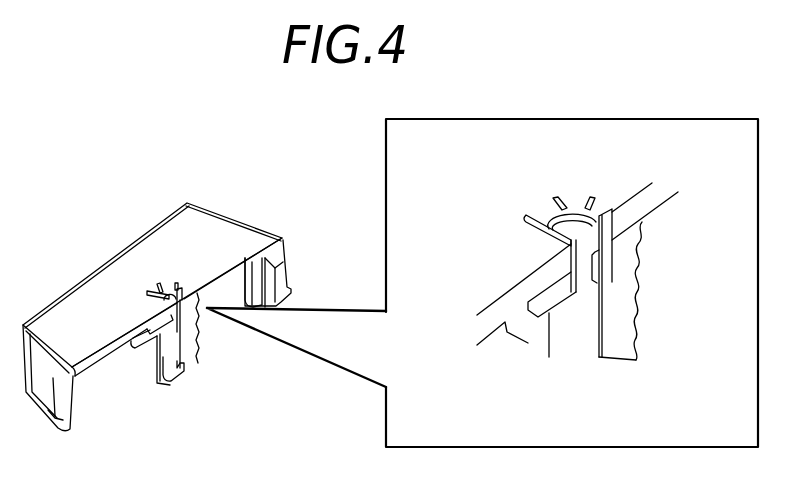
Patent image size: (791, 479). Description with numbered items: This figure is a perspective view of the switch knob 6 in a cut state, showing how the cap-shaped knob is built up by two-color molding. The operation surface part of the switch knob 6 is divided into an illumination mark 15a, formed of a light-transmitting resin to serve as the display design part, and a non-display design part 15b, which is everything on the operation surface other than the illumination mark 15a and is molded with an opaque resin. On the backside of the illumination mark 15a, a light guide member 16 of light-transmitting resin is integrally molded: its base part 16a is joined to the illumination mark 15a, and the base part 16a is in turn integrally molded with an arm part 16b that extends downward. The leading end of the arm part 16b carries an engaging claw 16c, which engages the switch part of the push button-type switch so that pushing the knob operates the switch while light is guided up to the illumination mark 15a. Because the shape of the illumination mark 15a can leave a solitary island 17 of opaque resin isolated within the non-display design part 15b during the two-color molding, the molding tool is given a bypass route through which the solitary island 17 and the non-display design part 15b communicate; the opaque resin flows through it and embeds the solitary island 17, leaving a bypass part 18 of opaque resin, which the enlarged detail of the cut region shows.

The switch knob 6 is at (125, 246).
The illumination mark 15a is at (535, 215).
The non-display design part 15b is at (208, 235).
The light guide member 16 is at (201, 331).
The base part 16a is at (607, 259).
The arm part 16b is at (617, 343).
The engaging claw 16c is at (158, 384).
The solitary island 17 is at (572, 224).
The bypass part 18 is at (532, 330).